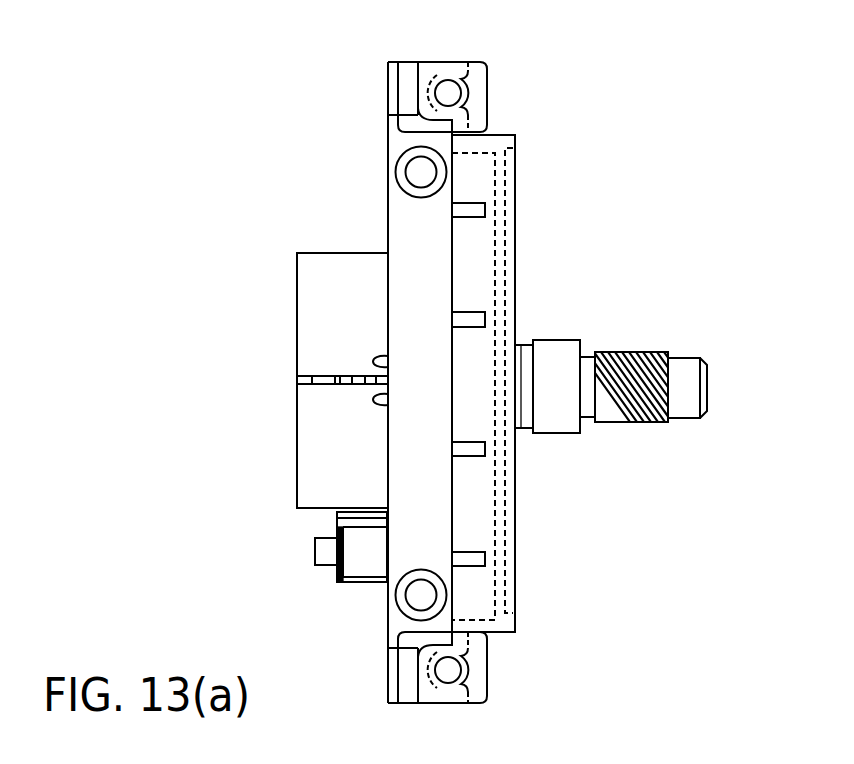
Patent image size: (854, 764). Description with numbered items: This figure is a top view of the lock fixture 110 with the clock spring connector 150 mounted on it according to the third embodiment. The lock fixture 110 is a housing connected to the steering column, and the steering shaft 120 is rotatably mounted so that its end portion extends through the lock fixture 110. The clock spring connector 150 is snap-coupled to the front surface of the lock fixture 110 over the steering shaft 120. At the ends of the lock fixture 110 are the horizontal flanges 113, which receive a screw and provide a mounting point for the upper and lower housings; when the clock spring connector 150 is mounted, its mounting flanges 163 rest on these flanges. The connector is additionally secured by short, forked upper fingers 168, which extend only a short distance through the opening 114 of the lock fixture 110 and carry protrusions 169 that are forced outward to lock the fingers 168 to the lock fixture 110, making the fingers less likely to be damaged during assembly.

The lock fixture 110 is at (388, 232).
The horizontal flanges 113 is at (478, 107).
The opening 114 is at (378, 360).
The steering shaft 120 is at (637, 423).
The clock spring connector 150 is at (495, 302).
The mounting flanges 163 is at (476, 77).
The forked upper fingers 168 is at (378, 394).
The protrusions 169 is at (376, 358).